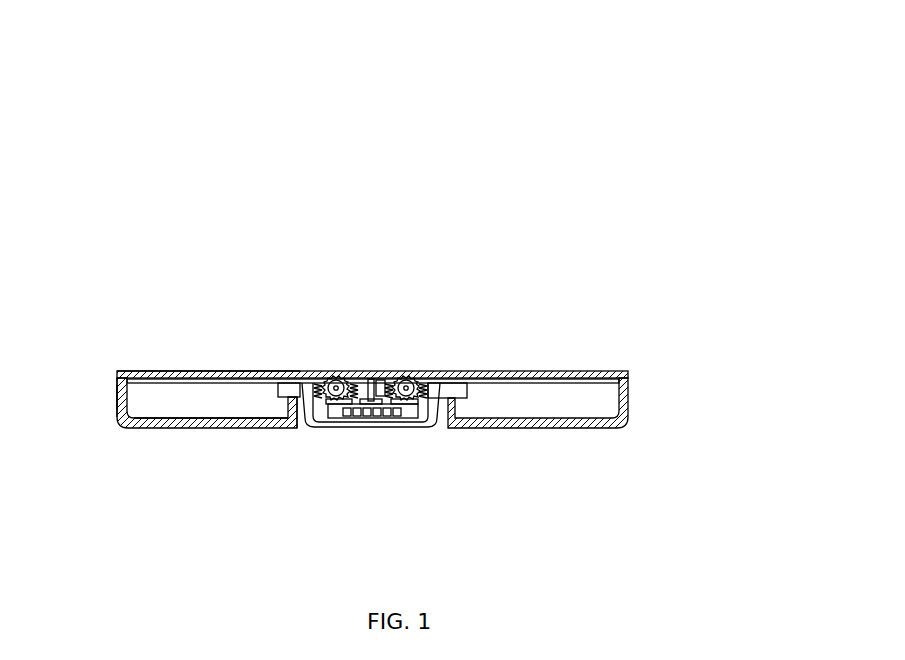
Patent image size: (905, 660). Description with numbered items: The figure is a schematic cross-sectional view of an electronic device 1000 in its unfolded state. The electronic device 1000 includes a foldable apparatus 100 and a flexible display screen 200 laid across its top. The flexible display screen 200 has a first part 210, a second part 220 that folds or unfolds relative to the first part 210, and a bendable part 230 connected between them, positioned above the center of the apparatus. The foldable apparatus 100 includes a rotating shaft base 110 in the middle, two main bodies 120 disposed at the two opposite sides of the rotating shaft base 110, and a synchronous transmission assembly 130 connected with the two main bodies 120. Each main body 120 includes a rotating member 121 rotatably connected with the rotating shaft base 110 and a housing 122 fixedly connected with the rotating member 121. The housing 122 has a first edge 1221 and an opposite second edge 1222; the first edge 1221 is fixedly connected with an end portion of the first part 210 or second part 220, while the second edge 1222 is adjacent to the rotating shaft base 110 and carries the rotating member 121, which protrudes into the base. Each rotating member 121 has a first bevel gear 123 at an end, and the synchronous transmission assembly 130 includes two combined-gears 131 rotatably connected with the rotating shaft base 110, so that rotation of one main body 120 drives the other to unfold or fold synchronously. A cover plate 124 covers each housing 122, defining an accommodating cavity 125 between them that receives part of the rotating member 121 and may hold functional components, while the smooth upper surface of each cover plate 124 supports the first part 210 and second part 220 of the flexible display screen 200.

The electronic device 1000 is at (540, 103).
The foldable apparatus 100 is at (555, 515).
The flexible display screen 200 is at (573, 285).
The first part 210 is at (197, 371).
The second part 220 is at (533, 372).
The bendable part 230 is at (357, 371).
The rotating shaft base 110 is at (425, 423).
The main body 120 is at (205, 427).
The rotating member 121 is at (282, 393).
The housing 122 is at (132, 420).
The first edge 1221 is at (114, 394).
The second edge 1222 is at (305, 387).
The first bevel gear 123 is at (323, 380).
The cover plate 124 is at (162, 371).
The accommodating cavity 125 is at (159, 410).
The synchronous transmission assembly 130 is at (368, 412).
The combined-gear 131 is at (348, 408).